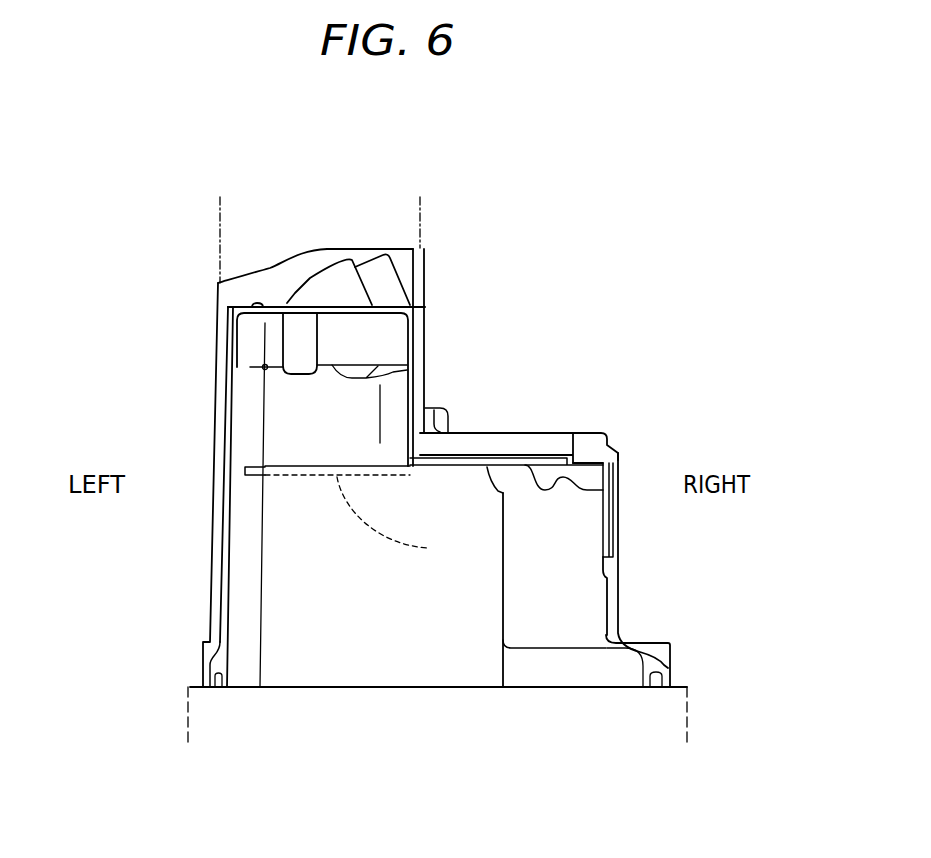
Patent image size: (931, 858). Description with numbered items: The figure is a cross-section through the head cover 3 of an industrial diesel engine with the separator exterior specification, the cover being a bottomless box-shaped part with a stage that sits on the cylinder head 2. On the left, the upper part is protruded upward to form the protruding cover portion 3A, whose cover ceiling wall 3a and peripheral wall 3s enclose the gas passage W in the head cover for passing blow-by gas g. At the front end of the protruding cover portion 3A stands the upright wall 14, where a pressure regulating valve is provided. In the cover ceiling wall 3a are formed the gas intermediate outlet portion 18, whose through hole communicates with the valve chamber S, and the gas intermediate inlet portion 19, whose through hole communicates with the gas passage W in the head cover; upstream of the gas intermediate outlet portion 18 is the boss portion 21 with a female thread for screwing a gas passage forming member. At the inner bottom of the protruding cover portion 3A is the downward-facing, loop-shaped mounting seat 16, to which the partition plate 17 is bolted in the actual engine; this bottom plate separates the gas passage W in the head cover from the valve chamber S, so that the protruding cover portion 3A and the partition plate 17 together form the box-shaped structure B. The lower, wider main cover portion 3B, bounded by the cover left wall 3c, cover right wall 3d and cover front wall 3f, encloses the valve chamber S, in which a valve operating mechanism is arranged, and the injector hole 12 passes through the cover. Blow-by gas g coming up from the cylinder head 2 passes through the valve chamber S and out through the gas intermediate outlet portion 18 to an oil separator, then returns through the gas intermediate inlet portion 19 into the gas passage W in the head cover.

The upright wall 14 is at (327, 260).
The gas intermediate inlet portion 19 is at (315, 298).
The gas intermediate outlet portion 18 is at (383, 268).
The cover ceiling wall 3a is at (243, 303).
The box-shaped structure B is at (471, 357).
The protruding cover portion 3A is at (418, 343).
The head cover 3 is at (596, 363).
The boss portion 21 is at (293, 360).
The peripheral wall 3s is at (225, 377).
The injector hole 12 is at (547, 433).
The main cover portion 3B is at (614, 438).
The gas passage in the head cover W is at (272, 415).
The cover left wall 3c is at (225, 518).
The mounting seat 16 is at (265, 477).
The partition plate 17 is at (398, 523).
The cover right wall 3d is at (613, 576).
The valve chamber S is at (270, 577).
The cylinder head 2 is at (205, 687).
The blow-by gas g is at (304, 660).
The cover front wall 3f is at (380, 660).